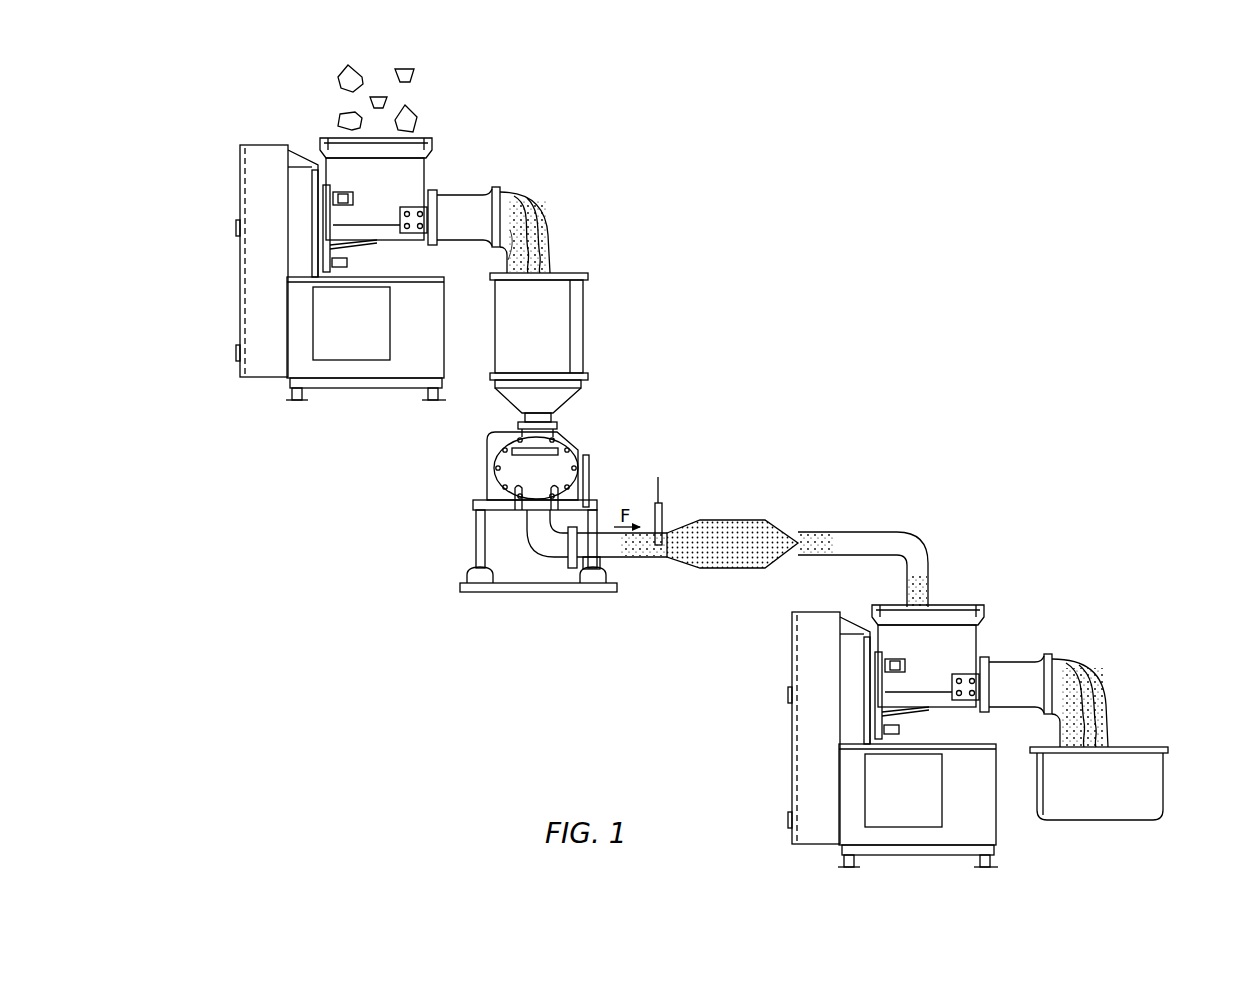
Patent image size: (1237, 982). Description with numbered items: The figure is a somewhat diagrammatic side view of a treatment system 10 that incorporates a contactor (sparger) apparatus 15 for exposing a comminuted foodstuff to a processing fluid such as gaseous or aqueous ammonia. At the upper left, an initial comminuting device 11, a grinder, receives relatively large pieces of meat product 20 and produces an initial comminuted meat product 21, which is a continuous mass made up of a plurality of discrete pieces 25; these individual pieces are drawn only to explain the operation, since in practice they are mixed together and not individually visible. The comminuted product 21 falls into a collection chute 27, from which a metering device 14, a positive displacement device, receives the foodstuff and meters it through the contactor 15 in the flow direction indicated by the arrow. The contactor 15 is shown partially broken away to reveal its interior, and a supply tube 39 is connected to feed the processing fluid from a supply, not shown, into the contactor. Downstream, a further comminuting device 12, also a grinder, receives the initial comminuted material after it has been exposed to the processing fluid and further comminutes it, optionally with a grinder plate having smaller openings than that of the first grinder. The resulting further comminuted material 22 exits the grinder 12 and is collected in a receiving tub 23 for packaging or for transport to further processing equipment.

The treatment system 10 is at (540, 643).
The initial comminuting device 11 is at (454, 188).
The further comminuting device 12 is at (1000, 640).
The metering device 14 is at (577, 440).
The contactor apparatus 15 is at (705, 578).
The meat product 20 is at (420, 100).
The initial comminuted meat product 21 is at (545, 225).
The further comminuted material 22 is at (1090, 660).
The receiving tub 23 is at (1130, 740).
The discrete pieces 25 is at (531, 208).
The collection chute 27 is at (592, 320).
The supply tube 39 is at (673, 513).